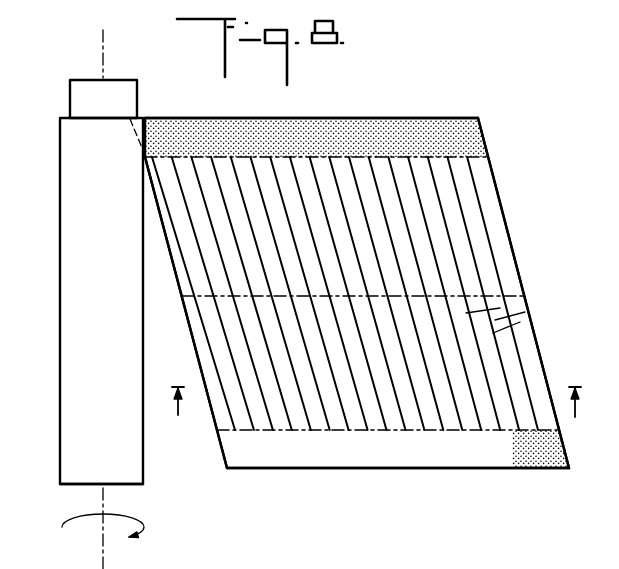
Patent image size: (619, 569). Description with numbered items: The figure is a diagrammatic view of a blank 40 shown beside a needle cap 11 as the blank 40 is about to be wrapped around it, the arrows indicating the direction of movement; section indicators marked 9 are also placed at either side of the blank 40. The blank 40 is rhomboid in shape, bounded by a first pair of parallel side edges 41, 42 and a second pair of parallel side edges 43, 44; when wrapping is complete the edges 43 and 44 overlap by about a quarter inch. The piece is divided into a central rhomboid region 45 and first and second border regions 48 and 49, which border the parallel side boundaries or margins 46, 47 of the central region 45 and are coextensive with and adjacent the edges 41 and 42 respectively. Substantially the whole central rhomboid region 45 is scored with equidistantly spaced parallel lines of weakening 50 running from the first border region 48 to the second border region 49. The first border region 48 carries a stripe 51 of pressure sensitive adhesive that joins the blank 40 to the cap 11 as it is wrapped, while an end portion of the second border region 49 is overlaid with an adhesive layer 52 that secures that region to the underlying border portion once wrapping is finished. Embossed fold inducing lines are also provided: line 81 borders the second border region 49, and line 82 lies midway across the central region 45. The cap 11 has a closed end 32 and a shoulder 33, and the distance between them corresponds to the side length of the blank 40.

The needle cap 11 is at (62, 238).
The closed end 32 is at (70, 486).
The shoulder 33 is at (86, 118).
The blank 40 is at (508, 192).
The side edge 41 is at (397, 117).
The side edge 42 is at (341, 470).
The side edge 43 is at (218, 446).
The side edge 44 is at (507, 230).
The central rhomboid region 45 is at (452, 276).
The side boundary 46 is at (323, 158).
The side boundary 47 is at (312, 434).
The first border region 48 is at (426, 124).
The second border region 49 is at (363, 452).
The lines of weakening 50 is at (525, 312).
The stripe of pressure sensitive adhesive 51 is at (255, 128).
The pressure sensitive adhesive layer 52 is at (546, 470).
The embossed fold inducing line 81 is at (267, 433).
The embossed fold inducing line 82 is at (228, 297).
The section line 9- 9 is at (375, 386).